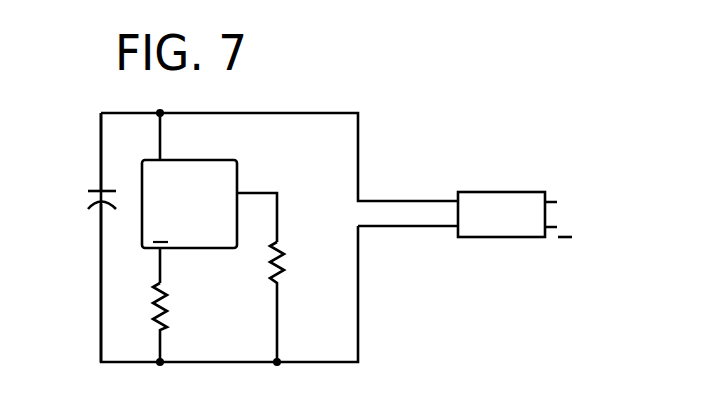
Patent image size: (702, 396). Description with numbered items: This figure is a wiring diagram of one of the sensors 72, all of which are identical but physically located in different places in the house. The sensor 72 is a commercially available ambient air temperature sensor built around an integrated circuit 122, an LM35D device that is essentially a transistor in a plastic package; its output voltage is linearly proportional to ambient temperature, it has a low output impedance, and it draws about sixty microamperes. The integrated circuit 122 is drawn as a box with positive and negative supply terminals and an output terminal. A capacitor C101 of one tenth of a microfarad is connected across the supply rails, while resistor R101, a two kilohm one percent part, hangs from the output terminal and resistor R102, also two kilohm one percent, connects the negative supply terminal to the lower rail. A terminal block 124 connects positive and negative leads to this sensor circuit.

The sensor 72 is at (377, 93).
The integrated circuit 122 is at (218, 159).
The terminal block 124 is at (490, 192).
The capacitor C101 is at (75, 199).
The resistor R101 is at (284, 277).
The resistor R102 is at (186, 305).